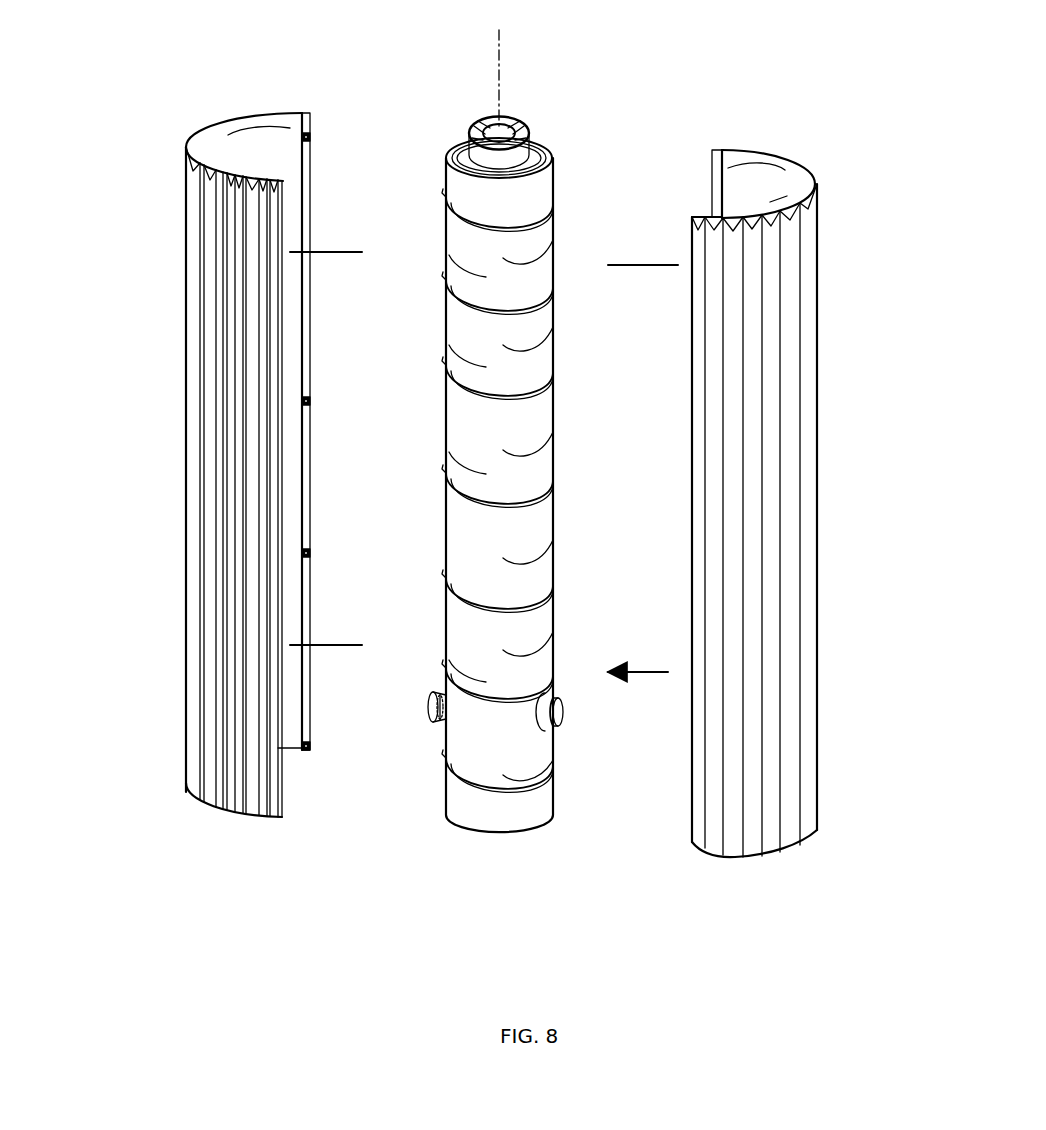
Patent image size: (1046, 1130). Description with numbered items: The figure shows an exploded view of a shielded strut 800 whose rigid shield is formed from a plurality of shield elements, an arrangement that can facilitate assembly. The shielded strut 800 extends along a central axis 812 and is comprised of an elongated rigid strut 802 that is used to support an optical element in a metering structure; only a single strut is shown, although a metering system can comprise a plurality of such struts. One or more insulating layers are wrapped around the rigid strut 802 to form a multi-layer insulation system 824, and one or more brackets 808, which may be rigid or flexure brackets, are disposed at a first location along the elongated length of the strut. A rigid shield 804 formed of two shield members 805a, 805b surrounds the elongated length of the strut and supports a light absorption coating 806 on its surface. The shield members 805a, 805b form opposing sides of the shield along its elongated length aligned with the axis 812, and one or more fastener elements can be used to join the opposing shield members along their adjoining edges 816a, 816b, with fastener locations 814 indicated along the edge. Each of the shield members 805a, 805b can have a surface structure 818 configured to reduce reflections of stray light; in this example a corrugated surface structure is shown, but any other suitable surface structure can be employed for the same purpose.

The shielded strut 800 is at (142, 72).
The elongated rigid strut 802 is at (472, 124).
The rigid shield 804 is at (220, 828).
The shield member 805a is at (186, 143).
The shield member 805b is at (816, 178).
The light absorption coating 806 is at (186, 405).
The brackets 808 is at (430, 702).
The central axis 812 is at (500, 64).
The fastener openings 814 is at (310, 137).
The adjoining edge 816a is at (310, 512).
The adjoining edge 816b is at (712, 172).
The surface structure 818 is at (172, 560).
The multi-layer insulation (MLI) system 824 is at (573, 221).